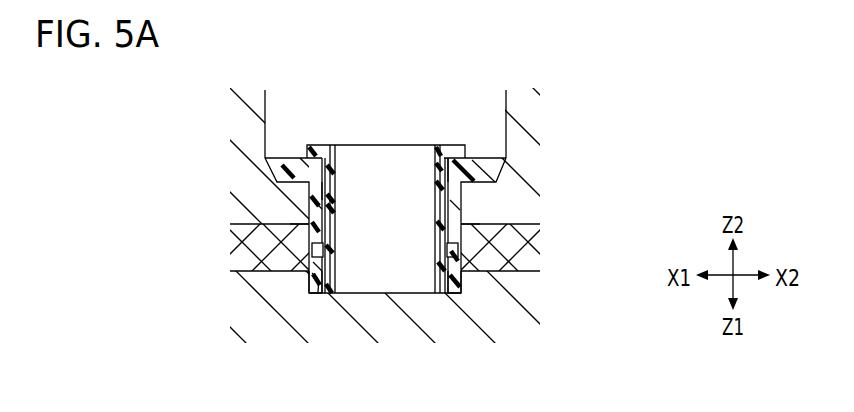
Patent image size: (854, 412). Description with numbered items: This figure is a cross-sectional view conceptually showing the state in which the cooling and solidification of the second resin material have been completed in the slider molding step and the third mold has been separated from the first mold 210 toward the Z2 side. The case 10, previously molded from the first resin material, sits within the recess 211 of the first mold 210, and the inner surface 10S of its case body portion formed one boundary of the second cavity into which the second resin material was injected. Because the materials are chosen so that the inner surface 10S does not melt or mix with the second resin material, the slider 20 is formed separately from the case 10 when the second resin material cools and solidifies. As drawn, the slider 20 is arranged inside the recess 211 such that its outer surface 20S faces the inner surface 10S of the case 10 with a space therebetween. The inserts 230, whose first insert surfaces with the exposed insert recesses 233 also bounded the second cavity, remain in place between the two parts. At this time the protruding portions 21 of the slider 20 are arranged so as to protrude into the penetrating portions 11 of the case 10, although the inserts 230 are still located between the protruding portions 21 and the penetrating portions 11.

The case 10 is at (268, 165).
The inner surface of the case body portion 10S is at (326, 183).
The penetrating portion 11 is at (306, 222).
The slider 20 is at (320, 146).
The outer surface of the slider 20S is at (464, 158).
The protruding portion 21 is at (325, 250).
The first mold 210 is at (250, 306).
The recess of the first mold 211 is at (310, 130).
The insert 230 is at (268, 250).
The insert recess 233 is at (325, 294).